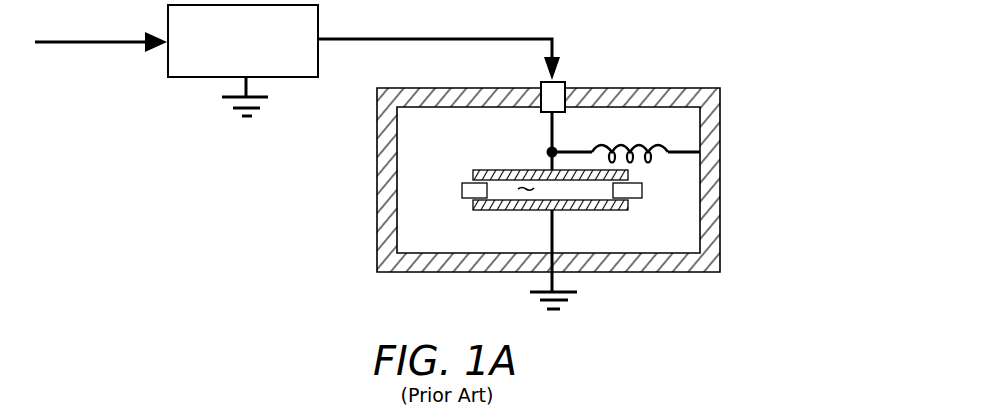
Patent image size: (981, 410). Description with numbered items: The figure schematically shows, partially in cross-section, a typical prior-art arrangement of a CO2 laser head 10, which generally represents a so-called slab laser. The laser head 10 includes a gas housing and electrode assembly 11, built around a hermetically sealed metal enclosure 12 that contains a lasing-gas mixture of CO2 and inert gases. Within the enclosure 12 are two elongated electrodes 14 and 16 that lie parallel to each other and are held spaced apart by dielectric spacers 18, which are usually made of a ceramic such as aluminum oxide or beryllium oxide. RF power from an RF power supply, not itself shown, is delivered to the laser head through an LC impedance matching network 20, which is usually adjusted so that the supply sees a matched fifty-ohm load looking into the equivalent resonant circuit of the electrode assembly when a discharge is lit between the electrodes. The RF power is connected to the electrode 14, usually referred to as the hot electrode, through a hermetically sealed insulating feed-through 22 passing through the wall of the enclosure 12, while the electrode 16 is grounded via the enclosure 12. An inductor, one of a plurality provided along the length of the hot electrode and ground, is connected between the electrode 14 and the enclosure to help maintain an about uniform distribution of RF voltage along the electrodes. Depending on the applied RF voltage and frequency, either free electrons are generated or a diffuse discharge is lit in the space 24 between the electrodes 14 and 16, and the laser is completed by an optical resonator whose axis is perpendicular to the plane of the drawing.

The laser head 10 is at (414, 177).
The gas housing and electrode assembly 11 is at (585, 221).
The metal enclosure 12 is at (712, 233).
The electrode 14 is at (492, 170).
The electrode 16 is at (578, 210).
The dielectric spacers 18 is at (460, 188).
The LC impedance matching network 20 is at (205, 77).
The insulating feed-through 22 is at (563, 81).
The space between the electrodes 24 is at (524, 192).